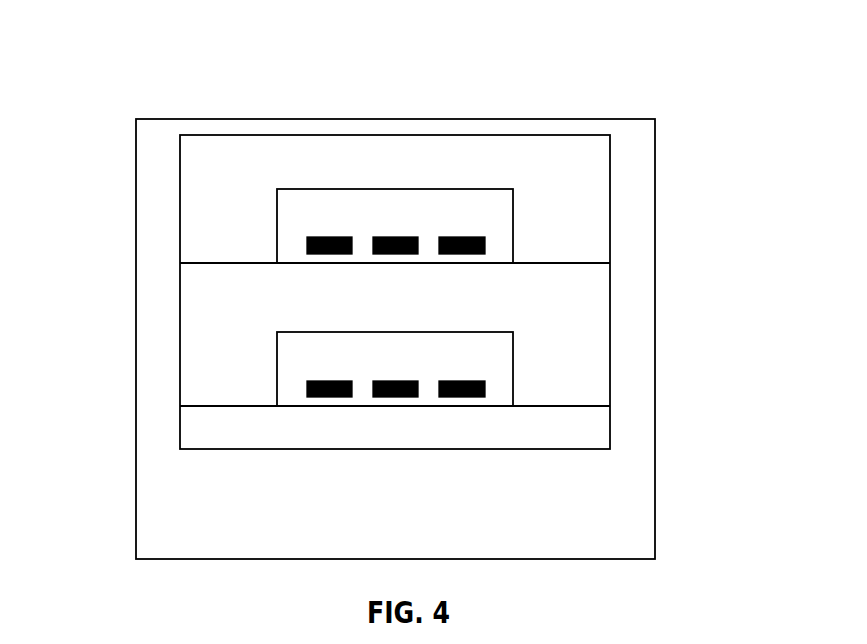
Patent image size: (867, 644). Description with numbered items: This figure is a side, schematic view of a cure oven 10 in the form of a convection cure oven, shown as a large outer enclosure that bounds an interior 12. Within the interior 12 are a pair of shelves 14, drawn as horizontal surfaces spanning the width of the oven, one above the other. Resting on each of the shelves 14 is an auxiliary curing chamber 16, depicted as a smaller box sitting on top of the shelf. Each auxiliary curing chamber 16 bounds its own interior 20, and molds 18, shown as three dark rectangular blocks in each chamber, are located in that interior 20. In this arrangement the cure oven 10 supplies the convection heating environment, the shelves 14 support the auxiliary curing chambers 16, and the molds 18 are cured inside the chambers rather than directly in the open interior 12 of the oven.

The cure oven 10 is at (632, 119).
The interior 12 is at (593, 182).
The shelves 14 is at (590, 262).
The auxiliary curing chambers 16 is at (304, 197).
The molds 18 is at (332, 237).
The interior of the auxiliary curing chamber 20 is at (490, 197).